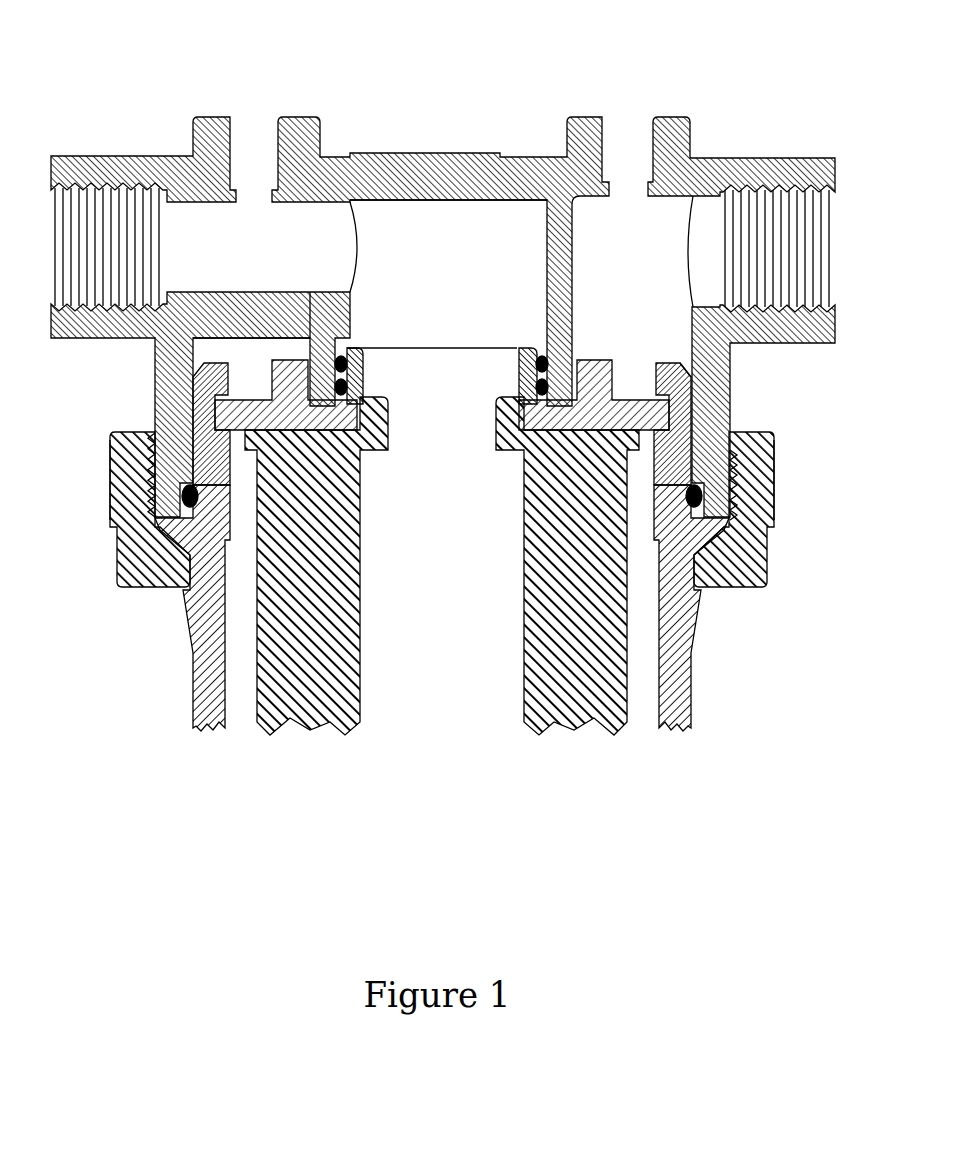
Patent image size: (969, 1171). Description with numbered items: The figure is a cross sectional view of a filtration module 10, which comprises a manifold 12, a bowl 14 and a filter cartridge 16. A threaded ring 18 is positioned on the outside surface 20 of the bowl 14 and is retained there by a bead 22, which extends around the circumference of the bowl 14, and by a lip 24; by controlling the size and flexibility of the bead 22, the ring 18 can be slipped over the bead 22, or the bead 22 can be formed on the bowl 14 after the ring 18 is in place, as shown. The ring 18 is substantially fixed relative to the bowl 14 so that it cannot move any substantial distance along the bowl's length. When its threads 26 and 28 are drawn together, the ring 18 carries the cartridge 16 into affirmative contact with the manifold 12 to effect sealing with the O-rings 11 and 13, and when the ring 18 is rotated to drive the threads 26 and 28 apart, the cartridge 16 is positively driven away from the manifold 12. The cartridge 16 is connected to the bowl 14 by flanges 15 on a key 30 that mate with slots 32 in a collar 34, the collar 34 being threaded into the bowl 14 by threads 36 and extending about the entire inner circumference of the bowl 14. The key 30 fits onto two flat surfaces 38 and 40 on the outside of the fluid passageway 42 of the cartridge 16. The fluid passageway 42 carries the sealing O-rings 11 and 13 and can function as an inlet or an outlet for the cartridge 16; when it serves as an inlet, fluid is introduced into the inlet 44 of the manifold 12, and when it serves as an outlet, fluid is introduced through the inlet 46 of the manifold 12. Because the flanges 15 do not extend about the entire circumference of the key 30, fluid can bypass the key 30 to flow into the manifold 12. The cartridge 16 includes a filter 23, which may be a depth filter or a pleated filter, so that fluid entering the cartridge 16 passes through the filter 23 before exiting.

The filtration module 10 is at (451, 123).
The O-ring 11 is at (515, 352).
The manifold 12 is at (722, 176).
The O-ring 13 is at (517, 388).
The bowl 14 is at (690, 672).
The flanges 15 is at (197, 418).
The filter cartridge 16 is at (366, 640).
The threaded ring 18 is at (773, 440).
The outside surface 20 is at (145, 588).
The bead 22 is at (187, 600).
The filter 23 is at (545, 636).
The lip 24 is at (730, 540).
The threads 26 is at (108, 452).
The threads 28 is at (110, 437).
The key 30 is at (284, 340).
The slots 32 is at (232, 410).
The collar 34 is at (676, 364).
The threads 36 is at (200, 500).
The flat surface 38 is at (500, 412).
The flat surface 40 is at (366, 397).
The fluid passageway 42 is at (433, 385).
The inlet 44 is at (103, 254).
The inlet 46 is at (785, 254).